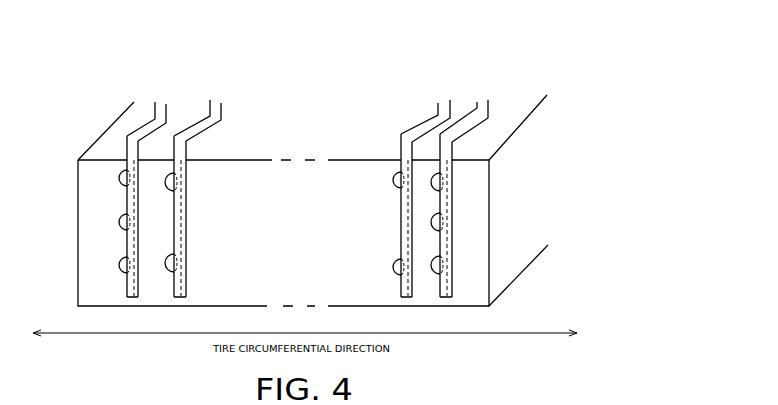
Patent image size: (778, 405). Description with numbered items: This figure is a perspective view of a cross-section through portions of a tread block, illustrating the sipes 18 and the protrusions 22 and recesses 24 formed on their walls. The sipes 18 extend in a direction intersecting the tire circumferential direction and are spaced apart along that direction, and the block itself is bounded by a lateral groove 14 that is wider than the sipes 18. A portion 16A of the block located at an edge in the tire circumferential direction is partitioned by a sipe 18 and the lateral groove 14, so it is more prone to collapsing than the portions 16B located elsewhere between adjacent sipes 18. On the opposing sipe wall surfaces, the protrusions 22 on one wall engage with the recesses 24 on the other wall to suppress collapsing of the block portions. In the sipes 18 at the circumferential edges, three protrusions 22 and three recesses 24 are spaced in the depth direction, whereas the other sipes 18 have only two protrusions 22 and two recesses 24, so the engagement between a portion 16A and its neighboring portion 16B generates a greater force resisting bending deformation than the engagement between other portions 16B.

The lateral groove 14 is at (46, 206).
The portion of the block located at an edge in the tire circumferential direction 16A is at (148, 113).
The portion of the block located at other areas 16B is at (188, 125).
The sipe 18 is at (180, 113).
The protrusion 22 is at (128, 170).
The recess 24 is at (121, 178).